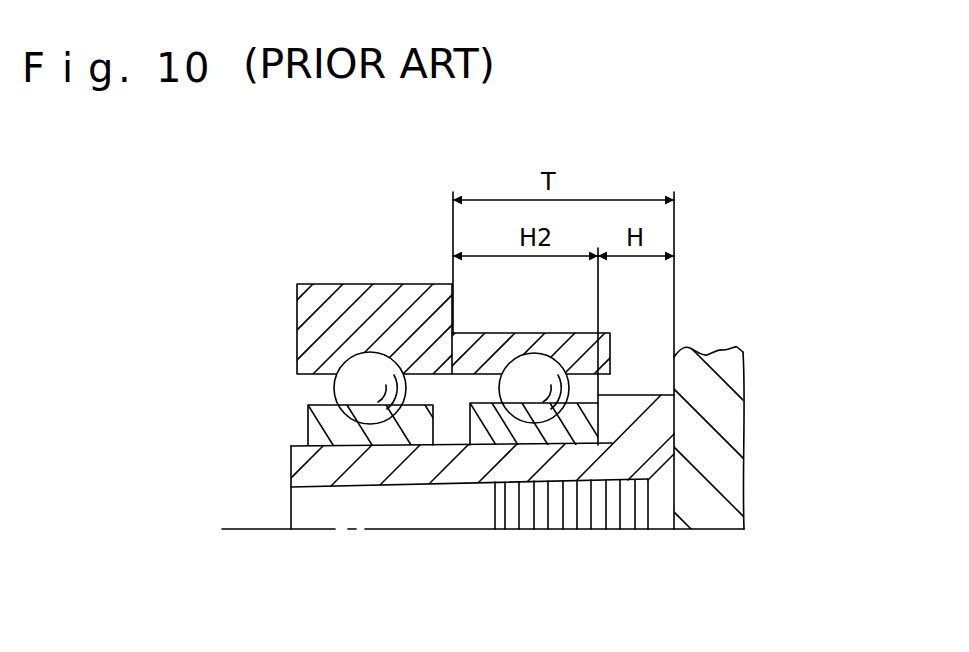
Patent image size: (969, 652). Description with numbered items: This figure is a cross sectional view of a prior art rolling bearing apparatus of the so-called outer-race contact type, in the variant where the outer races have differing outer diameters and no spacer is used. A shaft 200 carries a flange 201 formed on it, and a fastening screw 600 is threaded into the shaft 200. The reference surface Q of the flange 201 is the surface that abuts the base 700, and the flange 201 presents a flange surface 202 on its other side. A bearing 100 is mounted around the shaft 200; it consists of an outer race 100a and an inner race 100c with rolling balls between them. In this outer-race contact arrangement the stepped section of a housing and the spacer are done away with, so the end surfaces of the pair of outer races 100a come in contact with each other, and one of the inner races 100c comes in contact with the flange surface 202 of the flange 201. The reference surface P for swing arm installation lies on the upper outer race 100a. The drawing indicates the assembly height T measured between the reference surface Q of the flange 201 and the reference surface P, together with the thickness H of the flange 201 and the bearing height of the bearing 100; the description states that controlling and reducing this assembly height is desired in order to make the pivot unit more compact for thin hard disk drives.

The bearing 100 is at (480, 304).
The outer race 100a is at (307, 336).
The inner race 100c is at (541, 437).
The shaft 200 is at (293, 467).
The flange 201 is at (641, 398).
The flange surface 202 is at (649, 459).
The fastening screw 600 is at (600, 480).
The base 700 is at (717, 515).
The reference surface for swing arm installation P is at (458, 313).
The reference surface of the flange Q is at (678, 448).